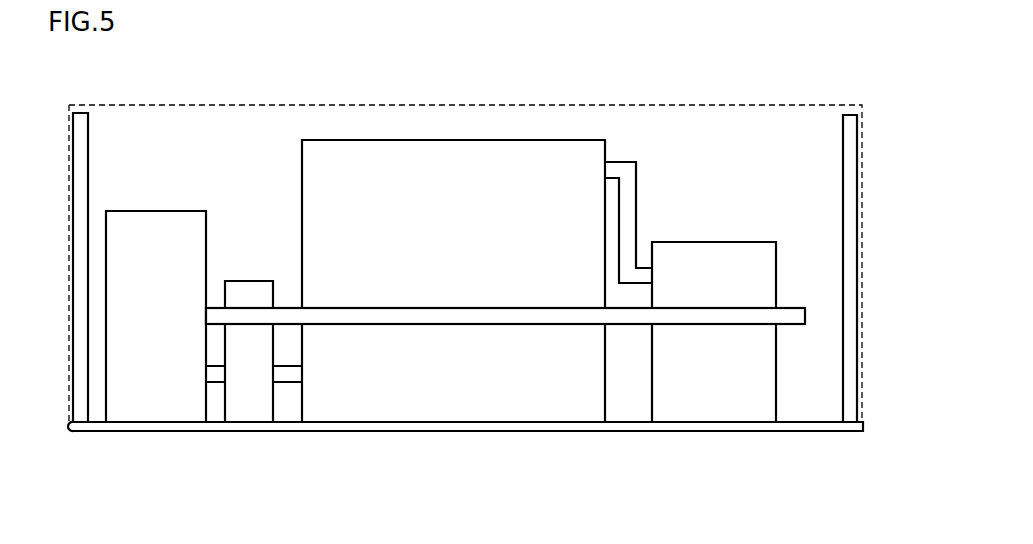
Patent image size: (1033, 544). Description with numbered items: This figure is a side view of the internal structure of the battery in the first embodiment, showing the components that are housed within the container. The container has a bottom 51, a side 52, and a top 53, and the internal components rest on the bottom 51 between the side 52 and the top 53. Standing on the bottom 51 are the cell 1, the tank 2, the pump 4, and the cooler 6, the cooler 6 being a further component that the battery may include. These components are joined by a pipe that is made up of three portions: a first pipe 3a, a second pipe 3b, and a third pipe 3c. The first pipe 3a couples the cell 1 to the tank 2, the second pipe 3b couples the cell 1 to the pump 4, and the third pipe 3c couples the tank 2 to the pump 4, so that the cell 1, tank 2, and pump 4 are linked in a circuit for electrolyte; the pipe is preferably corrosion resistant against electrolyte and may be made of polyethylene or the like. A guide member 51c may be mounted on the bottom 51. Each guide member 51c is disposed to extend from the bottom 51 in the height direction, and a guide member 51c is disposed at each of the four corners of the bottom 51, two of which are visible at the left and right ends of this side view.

The cell 1 is at (713, 405).
The tank 2 is at (455, 405).
The first pipe 3a is at (625, 170).
The second pipe 3b is at (626, 318).
The third pipe 3c is at (288, 373).
The pump 4 is at (250, 405).
The cooler 6 is at (157, 405).
The bottom 51 is at (833, 426).
The guide member 51c is at (80, 122).
The side 52 is at (862, 262).
The top 53 is at (830, 105).